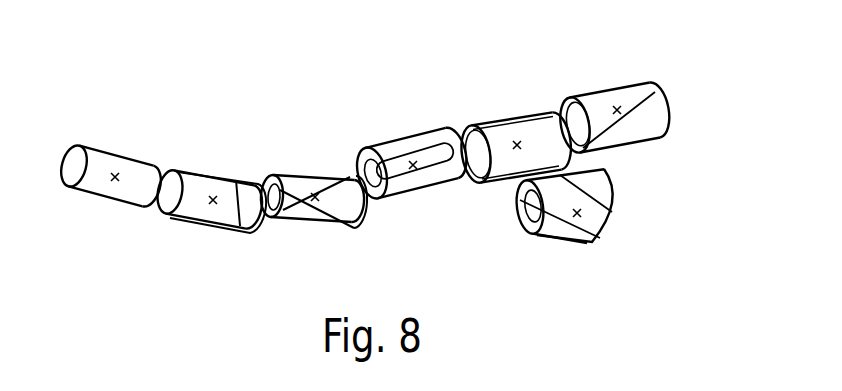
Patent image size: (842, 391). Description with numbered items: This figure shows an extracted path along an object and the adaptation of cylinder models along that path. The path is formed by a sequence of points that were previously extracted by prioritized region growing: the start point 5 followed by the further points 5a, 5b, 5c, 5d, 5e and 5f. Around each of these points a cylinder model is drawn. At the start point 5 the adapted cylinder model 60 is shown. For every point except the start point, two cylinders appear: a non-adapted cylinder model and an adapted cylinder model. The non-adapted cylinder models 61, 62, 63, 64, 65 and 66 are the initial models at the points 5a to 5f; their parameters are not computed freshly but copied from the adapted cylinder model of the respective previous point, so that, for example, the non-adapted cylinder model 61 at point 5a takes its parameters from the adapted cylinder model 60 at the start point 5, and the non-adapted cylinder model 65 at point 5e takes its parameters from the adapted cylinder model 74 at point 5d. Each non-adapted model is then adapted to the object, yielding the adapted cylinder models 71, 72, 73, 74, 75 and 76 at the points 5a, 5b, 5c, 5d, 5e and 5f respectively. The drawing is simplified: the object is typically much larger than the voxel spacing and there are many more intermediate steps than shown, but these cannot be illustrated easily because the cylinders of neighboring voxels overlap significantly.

The start point 5 is at (109, 169).
The path point 5a is at (210, 193).
The path point 5b is at (316, 187).
The path point 5c is at (409, 159).
The path point 5d is at (514, 143).
The path point 5e is at (645, 85).
The path point 5f is at (610, 244).
The adapted cylinder model 60 is at (110, 148).
The non-adapted cylinder model 61 is at (190, 175).
The non-adapted cylinder model 62 is at (290, 173).
The non-adapted cylinder model 63 is at (393, 150).
The non-adapted cylinder model 64 is at (475, 127).
The non-adapted cylinder model 65 is at (577, 98).
The non-adapted cylinder model 66 is at (623, 202).
The adapted cylinder model 71 is at (235, 198).
The adapted cylinder model 72 is at (333, 173).
The adapted cylinder model 73 is at (432, 125).
The adapted cylinder model 74 is at (532, 112).
The adapted cylinder model 75 is at (623, 77).
The adapted cylinder model 76 is at (610, 240).